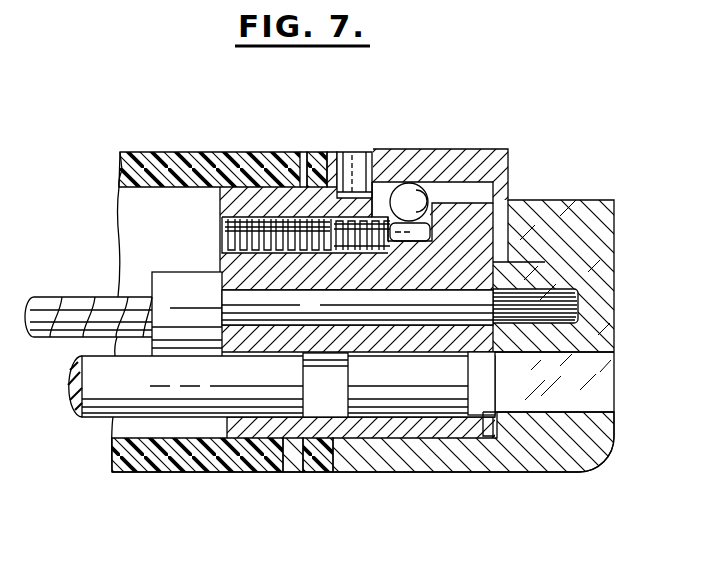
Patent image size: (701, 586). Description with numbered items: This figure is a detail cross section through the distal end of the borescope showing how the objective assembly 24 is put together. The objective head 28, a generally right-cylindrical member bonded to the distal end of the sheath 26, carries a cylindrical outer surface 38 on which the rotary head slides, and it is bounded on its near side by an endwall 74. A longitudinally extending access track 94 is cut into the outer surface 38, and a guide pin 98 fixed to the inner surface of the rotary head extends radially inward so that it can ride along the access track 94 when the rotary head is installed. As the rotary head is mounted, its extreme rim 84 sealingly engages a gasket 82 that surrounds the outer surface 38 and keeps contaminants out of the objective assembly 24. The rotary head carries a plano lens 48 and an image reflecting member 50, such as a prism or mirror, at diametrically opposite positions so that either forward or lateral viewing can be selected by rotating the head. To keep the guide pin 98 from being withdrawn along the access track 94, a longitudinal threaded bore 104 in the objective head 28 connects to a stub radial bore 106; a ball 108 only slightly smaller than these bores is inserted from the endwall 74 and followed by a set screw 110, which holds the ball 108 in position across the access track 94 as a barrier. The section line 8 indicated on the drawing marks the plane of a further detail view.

The section line 8- 8 is at (313, 99).
The objective assembly 24 is at (575, 143).
The sheath 26 is at (152, 467).
The objective head 28 is at (467, 202).
The outer surface 38 is at (417, 440).
The plano lens 48 is at (600, 388).
The image reflecting member 50 is at (568, 200).
The endwall 74 is at (222, 262).
The gasket 82 is at (313, 155).
The rim 84 is at (320, 474).
The access track 94 is at (378, 188).
The guide pin 98 is at (353, 157).
The threaded bore 104 is at (250, 250).
The stub radial bore 106 is at (427, 243).
The ball 108 is at (413, 193).
The set screw 110 is at (318, 276).